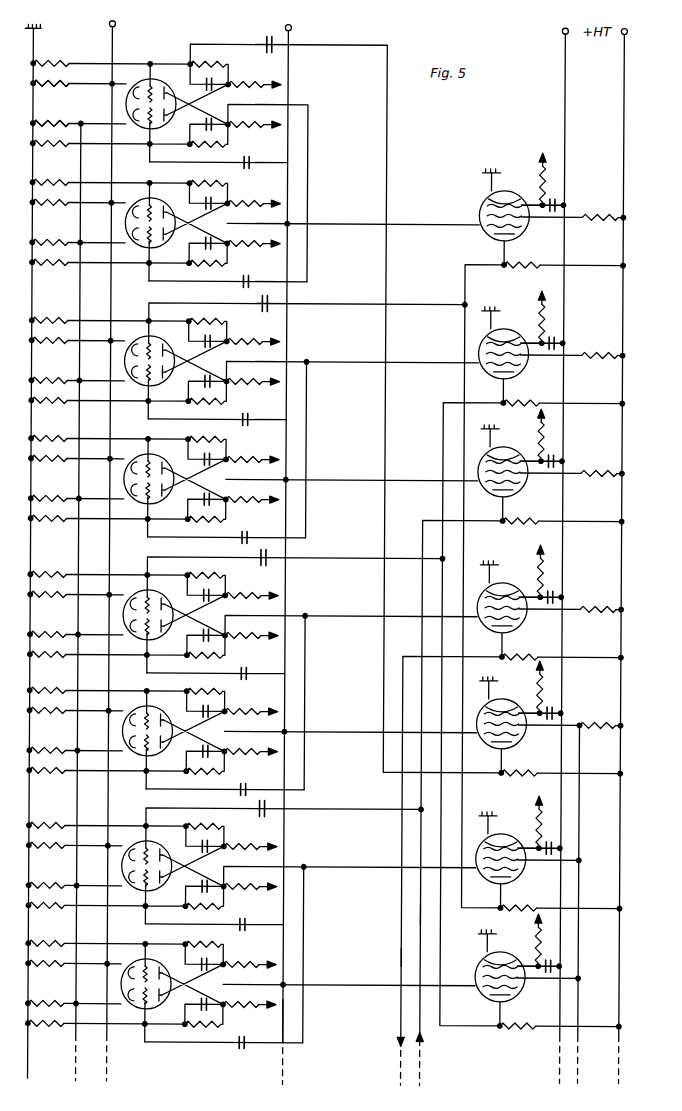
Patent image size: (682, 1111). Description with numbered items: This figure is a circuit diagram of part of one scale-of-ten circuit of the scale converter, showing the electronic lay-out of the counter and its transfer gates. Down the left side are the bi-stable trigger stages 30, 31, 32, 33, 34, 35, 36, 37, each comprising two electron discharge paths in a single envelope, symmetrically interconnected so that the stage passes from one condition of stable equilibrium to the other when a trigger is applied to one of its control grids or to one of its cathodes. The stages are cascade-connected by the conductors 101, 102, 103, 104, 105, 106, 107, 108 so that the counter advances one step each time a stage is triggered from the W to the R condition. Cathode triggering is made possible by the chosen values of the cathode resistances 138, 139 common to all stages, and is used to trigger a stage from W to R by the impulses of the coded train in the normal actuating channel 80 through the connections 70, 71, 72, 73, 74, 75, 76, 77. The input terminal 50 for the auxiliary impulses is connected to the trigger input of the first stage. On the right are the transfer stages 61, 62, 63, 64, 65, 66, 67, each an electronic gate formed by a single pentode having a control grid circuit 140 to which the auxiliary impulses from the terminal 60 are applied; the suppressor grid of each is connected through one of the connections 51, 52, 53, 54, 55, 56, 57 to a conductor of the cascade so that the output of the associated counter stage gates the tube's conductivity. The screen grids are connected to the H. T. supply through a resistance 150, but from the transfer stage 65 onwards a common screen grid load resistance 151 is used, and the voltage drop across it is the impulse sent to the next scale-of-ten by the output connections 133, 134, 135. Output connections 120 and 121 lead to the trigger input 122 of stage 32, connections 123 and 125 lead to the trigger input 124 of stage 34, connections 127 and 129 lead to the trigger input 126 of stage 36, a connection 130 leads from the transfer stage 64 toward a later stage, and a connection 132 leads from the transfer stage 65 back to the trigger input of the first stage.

The bi-stable trigger stage 30 is at (219, 152).
The bi-stable trigger stage 31 is at (228, 271).
The bi-stable trigger stage 32 is at (217, 409).
The bi-stable trigger stage 33 is at (227, 527).
The bi-stable trigger stage 34 is at (216, 663).
The bi-stable trigger stage 35 is at (225, 779).
The bi-stable trigger stage 36 is at (214, 914).
The bi-stable trigger stage 37 is at (224, 1032).
The input terminal 50 is at (299, 549).
The connection 51 is at (353, 217).
The connection 52 is at (393, 354).
The connection 53 is at (352, 473).
The connection 54 is at (391, 608).
The connection 55 is at (350, 725).
The connection 56 is at (390, 859).
The connection 57 is at (349, 978).
The terminal 60 is at (553, 548).
The transfer stage 61 is at (552, 219).
The transfer stage 62 is at (551, 357).
The transfer stage 63 is at (551, 475).
The transfer stage 64 is at (550, 611).
The transfer stage 65 is at (549, 727).
The transfer stage 66 is at (548, 862).
The transfer stage 67 is at (548, 980).
The connection 70 is at (155, 111).
The connection 71 is at (155, 230).
The connection 72 is at (154, 368).
The connection 73 is at (153, 486).
The connection 74 is at (152, 622).
The connection 75 is at (152, 738).
The connection 76 is at (151, 873).
The connection 77 is at (150, 991).
The normal actuating channel 80 is at (112, 542).
The conductor 101 is at (282, 193).
The conductor 102 is at (270, 352).
The conductor 103 is at (321, 450).
The conductor 104 is at (268, 607).
The conductor 105 is at (318, 703).
The conductor 106 is at (267, 857).
The conductor 107 is at (319, 955).
The conductor 108 is at (286, 1021).
The connection 120 is at (465, 279).
The connection 121 is at (466, 606).
The trigger input 122 is at (308, 305).
The connection 123 is at (458, 713).
The trigger input 124 is at (295, 558).
The connection 125 is at (443, 580).
The trigger input 126 is at (284, 809).
The connection 127 is at (454, 795).
The connection 129 is at (422, 912).
The connection 130 is at (403, 953).
The connection 132 is at (345, 404).
The output connection 133 is at (576, 793).
The output connection 134 is at (563, 874).
The output connection 135 is at (563, 984).
The cathode resistance 138 is at (51, 90).
The cathode resistance 139 is at (51, 115).
The control grid circuit 140 is at (531, 546).
The resistance 150 is at (572, 405).
The common screen grid load resistance 151 is at (570, 716).